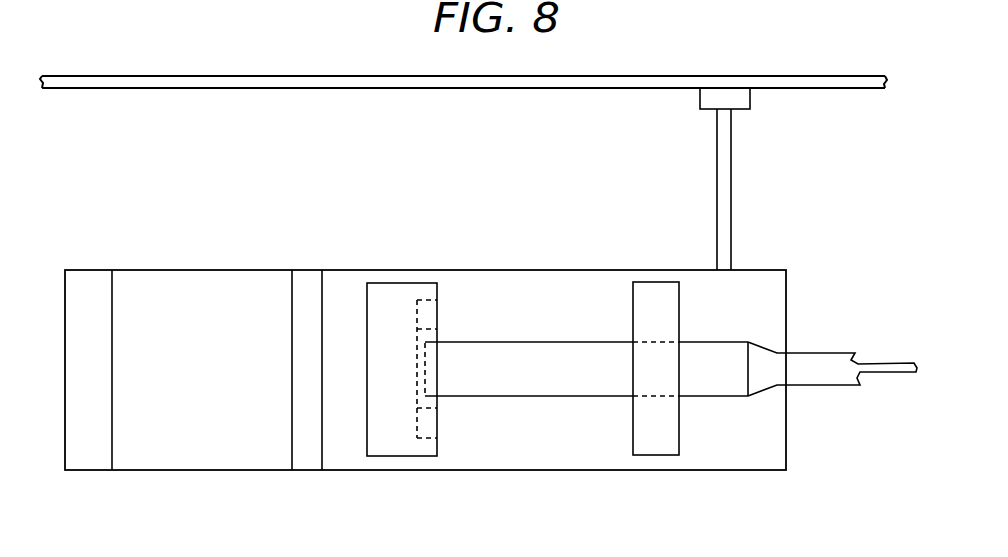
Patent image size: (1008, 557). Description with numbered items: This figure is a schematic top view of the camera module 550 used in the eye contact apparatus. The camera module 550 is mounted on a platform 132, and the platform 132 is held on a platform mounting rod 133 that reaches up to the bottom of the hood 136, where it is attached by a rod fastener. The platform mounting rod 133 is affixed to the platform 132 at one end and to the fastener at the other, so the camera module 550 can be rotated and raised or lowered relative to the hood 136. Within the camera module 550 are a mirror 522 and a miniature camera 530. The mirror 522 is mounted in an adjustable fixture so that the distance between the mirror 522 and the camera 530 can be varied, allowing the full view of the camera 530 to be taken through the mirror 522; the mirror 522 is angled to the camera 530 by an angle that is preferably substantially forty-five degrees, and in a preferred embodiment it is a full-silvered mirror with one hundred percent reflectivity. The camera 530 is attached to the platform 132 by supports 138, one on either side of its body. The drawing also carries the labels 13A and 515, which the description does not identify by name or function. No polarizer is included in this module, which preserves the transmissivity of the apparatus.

The hood 136 is at (235, 76).
The mounting block 13A is at (712, 110).
The platform mounting rod 133 is at (732, 213).
The platform 132 is at (758, 453).
The mirror 522 is at (203, 268).
The camera module 550 is at (400, 209).
The piston head 515 is at (428, 310).
The miniature camera 530 is at (573, 360).
The supports 138 is at (418, 447).